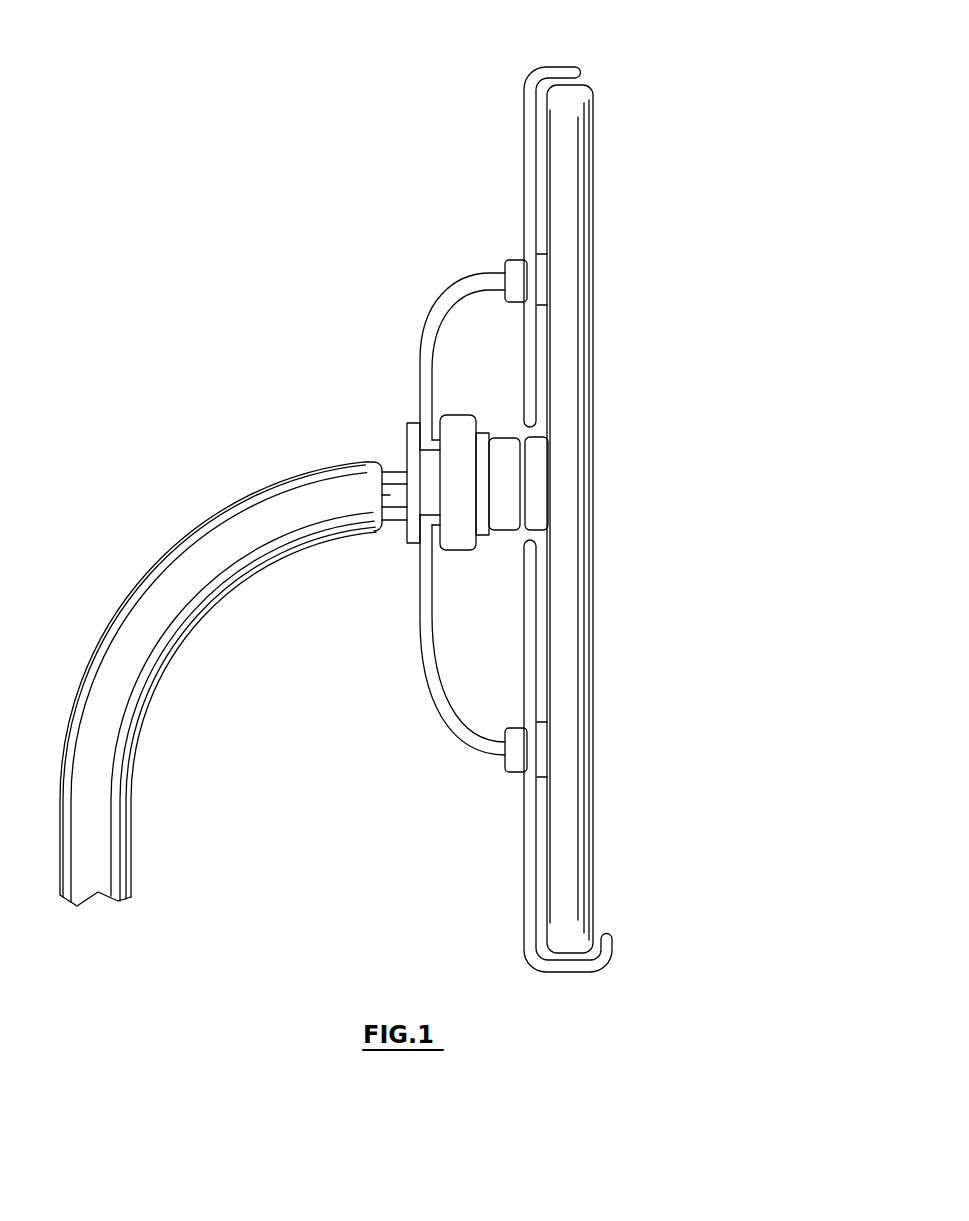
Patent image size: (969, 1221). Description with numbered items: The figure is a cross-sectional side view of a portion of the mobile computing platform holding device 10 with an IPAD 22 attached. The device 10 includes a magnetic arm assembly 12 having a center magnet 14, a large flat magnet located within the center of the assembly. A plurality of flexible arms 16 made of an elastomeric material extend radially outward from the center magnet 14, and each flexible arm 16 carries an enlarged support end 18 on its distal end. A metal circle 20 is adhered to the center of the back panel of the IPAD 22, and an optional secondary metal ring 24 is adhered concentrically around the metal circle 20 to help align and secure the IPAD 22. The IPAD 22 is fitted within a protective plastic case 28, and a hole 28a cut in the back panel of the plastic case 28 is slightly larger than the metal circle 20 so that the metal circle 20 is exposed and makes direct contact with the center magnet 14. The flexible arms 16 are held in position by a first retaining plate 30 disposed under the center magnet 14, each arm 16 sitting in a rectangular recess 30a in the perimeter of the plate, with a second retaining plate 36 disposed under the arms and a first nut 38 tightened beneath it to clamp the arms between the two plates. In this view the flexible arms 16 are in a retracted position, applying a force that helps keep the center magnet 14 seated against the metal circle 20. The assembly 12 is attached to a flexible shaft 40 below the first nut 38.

The mobile computing platform holding device 10 is at (146, 146).
The magnetic arm assembly 12 is at (383, 413).
The center magnet 14 is at (505, 515).
The flexible arms 16 is at (428, 316).
The support end 18 is at (512, 270).
The metal circle 20 is at (540, 486).
The IPAD 22 is at (599, 519).
The secondary metal ring 24 is at (540, 286).
The plastic case 28 is at (593, 517).
The hole 28a is at (538, 430).
The first retaining plate 30 is at (446, 487).
The rectangular recess 30a is at (437, 423).
The second retaining plate 36 is at (407, 538).
The first nut 38 is at (392, 496).
The flexible shaft 40 is at (160, 602).